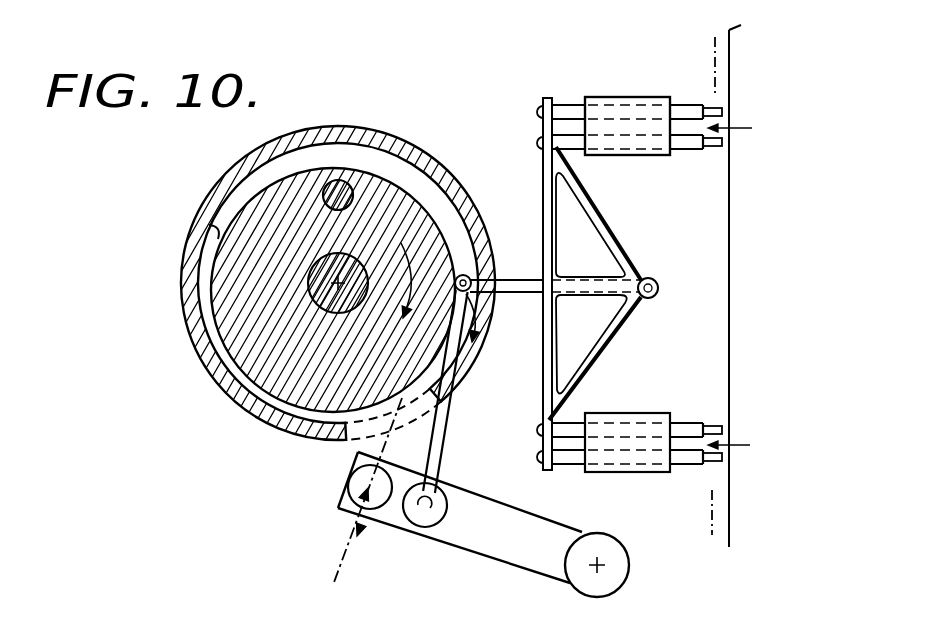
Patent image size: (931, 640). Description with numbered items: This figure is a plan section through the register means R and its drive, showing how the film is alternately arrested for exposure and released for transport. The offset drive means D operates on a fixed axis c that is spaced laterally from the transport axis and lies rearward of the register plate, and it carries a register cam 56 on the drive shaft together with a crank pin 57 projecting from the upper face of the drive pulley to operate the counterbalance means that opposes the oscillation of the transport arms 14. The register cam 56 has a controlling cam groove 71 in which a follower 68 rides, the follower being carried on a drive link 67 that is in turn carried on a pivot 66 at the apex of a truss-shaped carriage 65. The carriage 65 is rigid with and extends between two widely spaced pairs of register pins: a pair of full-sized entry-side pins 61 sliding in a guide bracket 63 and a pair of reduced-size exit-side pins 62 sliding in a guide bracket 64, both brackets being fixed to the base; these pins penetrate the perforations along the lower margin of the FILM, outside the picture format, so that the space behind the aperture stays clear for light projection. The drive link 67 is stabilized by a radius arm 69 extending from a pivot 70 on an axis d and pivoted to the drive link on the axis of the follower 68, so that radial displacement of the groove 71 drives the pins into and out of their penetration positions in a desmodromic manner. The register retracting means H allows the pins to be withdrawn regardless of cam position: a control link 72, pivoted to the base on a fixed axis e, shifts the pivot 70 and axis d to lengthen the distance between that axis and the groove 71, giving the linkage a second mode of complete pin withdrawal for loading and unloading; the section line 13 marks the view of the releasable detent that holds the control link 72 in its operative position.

The register cam 56 is at (206, 200).
The controlling cam groove 71 is at (212, 233).
The offset drive means D is at (242, 331).
The fixed axis c is at (338, 284).
The crank pin 57 is at (341, 181).
The follower 68 is at (469, 276).
The drive link 67 is at (512, 293).
The radius arm 69 is at (437, 452).
The pivot 70 is at (432, 506).
The axis d is at (424, 525).
The register retracting means H is at (481, 541).
The control link 72 is at (528, 565).
The fixed axis e is at (603, 567).
The section line 13- 13 is at (414, 425).
The carriage 65 is at (602, 206).
The pivot 66 is at (661, 276).
The register means R is at (617, 92).
The guide bracket 64 is at (643, 96).
The register pins 62 is at (725, 113).
The guide bracket 63 is at (617, 473).
The register pins 61 is at (727, 431).
The film FILM is at (736, 205).
The transport arms 14 is at (690, 58).